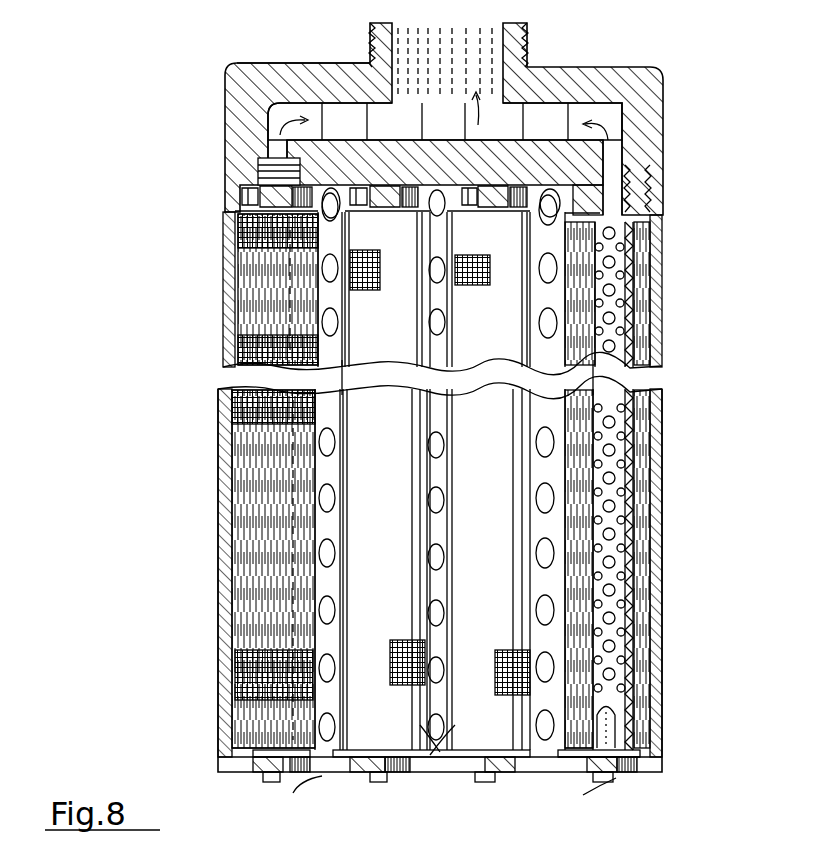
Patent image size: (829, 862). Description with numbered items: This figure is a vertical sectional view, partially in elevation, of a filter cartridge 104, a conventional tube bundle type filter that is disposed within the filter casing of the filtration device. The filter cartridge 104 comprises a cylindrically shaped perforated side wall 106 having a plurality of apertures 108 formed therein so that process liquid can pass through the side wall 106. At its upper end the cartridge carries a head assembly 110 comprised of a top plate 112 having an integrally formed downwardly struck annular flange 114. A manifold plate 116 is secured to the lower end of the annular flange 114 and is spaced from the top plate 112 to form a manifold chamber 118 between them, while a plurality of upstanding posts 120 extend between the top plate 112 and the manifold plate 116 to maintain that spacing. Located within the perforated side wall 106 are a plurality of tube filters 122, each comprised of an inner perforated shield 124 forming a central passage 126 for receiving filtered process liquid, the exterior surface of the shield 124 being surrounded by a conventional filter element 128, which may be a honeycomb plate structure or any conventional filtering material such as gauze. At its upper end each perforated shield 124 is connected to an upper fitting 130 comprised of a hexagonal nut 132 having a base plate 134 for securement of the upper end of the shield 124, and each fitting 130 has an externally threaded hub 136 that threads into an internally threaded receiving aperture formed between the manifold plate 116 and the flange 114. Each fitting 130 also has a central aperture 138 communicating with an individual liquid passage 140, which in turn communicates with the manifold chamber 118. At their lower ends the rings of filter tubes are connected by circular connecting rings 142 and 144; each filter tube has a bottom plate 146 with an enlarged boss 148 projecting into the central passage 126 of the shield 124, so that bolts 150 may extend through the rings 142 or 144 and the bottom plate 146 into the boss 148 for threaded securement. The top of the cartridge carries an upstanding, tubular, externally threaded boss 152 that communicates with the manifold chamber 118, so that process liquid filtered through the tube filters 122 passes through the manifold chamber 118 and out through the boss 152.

The filter cartridge 104 is at (205, 62).
The perforated side wall 106 is at (662, 412).
The apertures 108 is at (543, 445).
The head assembly 110 is at (641, 64).
The top plate 112 is at (278, 76).
The annular flange 114 is at (245, 142).
The manifold plate 116 is at (402, 205).
The manifold chamber 118 is at (268, 108).
The upstanding posts 120 is at (340, 100).
The tube filters 122 is at (240, 445).
The inner perforated shield 124 is at (620, 655).
The central passage 126 is at (633, 678).
The filter element 128 is at (262, 668).
The upper fitting 130 is at (645, 200).
The hexagonal nut 132 is at (512, 218).
The base plate 134 is at (230, 222).
The externally threaded hub 136 is at (255, 172).
The central aperture 138 is at (607, 216).
The liquid passage 140 is at (612, 150).
The circular connecting ring 142 is at (620, 778).
The circular connecting ring 144 is at (430, 755).
The bottom plate 146 is at (236, 760).
The enlarged boss 148 is at (612, 738).
The bolts 150 is at (604, 780).
The externally threaded boss 152 is at (512, 50).